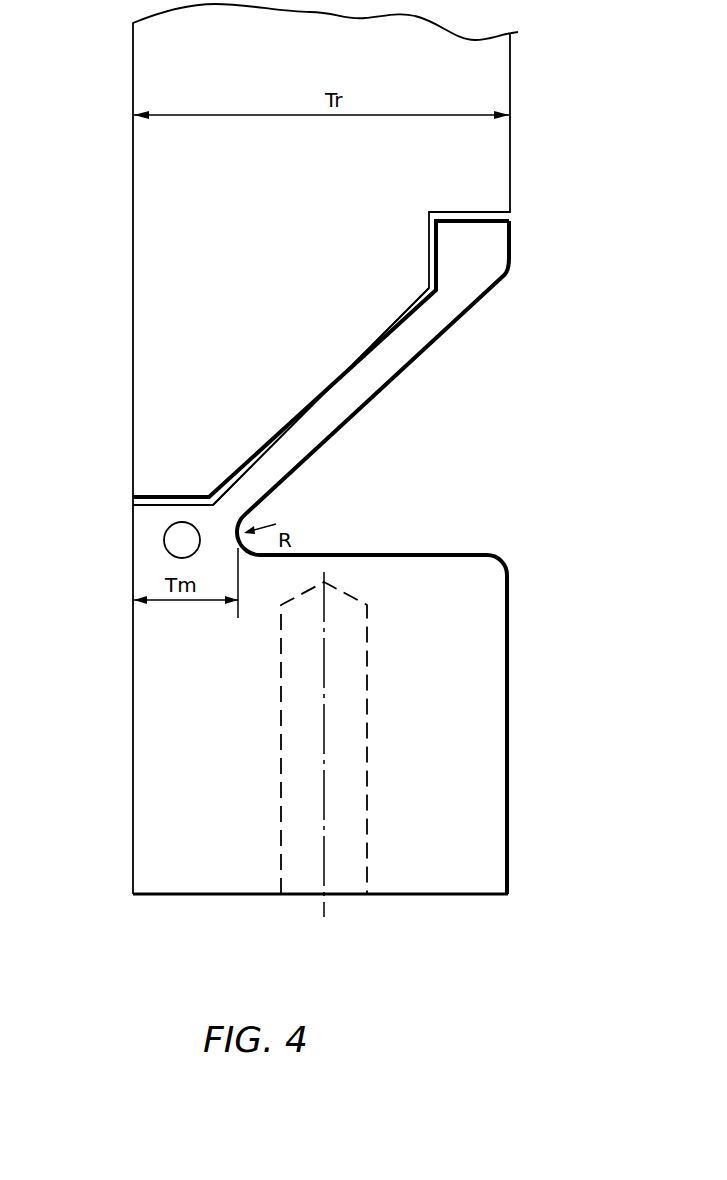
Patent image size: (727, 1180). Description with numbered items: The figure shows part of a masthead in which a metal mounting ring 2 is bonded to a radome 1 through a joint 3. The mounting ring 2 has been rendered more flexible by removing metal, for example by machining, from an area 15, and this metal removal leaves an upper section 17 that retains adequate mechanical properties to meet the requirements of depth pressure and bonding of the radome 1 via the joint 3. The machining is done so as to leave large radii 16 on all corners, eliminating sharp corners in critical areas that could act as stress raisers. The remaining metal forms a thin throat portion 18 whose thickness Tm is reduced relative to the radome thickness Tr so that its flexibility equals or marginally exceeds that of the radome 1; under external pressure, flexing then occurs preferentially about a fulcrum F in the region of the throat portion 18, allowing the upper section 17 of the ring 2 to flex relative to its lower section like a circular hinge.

The radome 1 is at (152, 218).
The mounting ring 2 is at (147, 696).
The joint 3 is at (336, 375).
The area 15 is at (441, 436).
The large radii 16 is at (507, 266).
The section 17 is at (304, 434).
The throat portion 18 is at (164, 539).